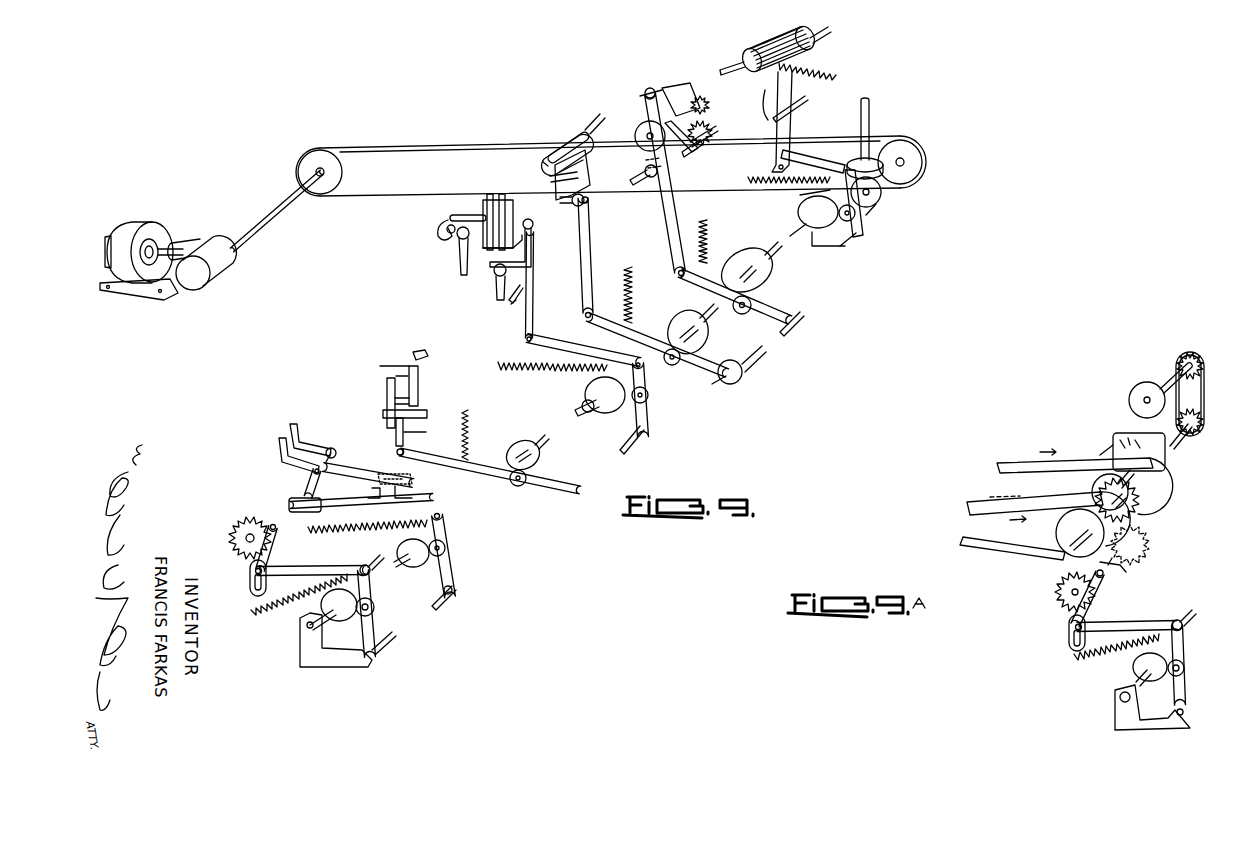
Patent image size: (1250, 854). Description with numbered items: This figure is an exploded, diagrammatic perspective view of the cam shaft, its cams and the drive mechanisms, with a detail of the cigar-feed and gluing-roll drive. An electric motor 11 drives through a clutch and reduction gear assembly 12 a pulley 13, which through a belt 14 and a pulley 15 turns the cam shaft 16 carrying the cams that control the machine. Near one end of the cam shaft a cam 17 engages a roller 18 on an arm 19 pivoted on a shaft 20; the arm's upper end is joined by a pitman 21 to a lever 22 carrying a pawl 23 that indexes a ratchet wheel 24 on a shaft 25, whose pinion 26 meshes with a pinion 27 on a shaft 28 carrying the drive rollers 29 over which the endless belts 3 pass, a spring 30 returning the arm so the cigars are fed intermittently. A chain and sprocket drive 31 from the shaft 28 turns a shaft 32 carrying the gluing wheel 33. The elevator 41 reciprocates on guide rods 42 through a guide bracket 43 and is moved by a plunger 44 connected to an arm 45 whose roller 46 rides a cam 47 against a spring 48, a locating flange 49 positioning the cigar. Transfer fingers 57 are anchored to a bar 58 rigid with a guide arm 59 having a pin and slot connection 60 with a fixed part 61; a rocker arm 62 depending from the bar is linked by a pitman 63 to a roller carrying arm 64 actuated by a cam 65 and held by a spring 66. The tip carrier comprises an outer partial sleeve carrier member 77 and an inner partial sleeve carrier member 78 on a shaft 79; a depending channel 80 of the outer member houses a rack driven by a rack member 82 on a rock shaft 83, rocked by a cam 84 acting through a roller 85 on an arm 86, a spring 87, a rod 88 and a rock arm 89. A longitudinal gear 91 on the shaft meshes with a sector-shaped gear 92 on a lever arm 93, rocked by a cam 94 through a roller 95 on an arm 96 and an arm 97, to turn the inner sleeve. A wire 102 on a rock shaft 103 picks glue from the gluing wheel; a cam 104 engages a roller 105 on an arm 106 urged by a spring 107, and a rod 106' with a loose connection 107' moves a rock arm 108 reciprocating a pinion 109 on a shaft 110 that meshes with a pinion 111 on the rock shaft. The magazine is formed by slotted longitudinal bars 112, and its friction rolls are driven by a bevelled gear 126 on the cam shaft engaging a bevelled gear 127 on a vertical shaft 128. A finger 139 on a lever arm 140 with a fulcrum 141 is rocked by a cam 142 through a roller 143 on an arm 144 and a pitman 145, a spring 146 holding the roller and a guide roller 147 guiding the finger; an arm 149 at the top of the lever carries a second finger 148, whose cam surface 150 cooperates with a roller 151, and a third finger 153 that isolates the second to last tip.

In FIG. 9A, the endless belts 3 is at (1040, 458).
In FIG. 9, the electric motor 11 is at (150, 226).
In FIG. 9, the clutch and reduction gear assembly 12 is at (230, 257).
In FIG. 9, the pulley 13 is at (333, 166).
In FIG. 9, the belt 14 is at (407, 148).
In FIG. 9, the pulley 15 is at (911, 155).
In FIG. 9, the cam shaft 16 is at (374, 580).
In FIG. 9A, the cam shaft 16 is at (1190, 624).
In FIG. 9, the cam 17 is at (344, 612).
In FIG. 9A, the cam 17 is at (1133, 670).
In FIG. 9, the roller 18 is at (363, 617).
In FIG. 9A, the roller 18 is at (1185, 665).
In FIG. 9, the arm 19 is at (386, 642).
In FIG. 9A, the arm 19 is at (1186, 691).
In FIG. 9, the shaft 20 is at (437, 610).
In FIG. 9, the rod or pitman 21 is at (306, 570).
In FIG. 9A, the rod or pitman 21 is at (1135, 625).
In FIG. 9, the lever 22 is at (250, 570).
In FIG. 9A, the lever 22 is at (1068, 620).
In FIG. 9, the pawl 23 is at (270, 524).
In FIG. 9A, the pawl 23 is at (1104, 580).
In FIG. 9, the ratchet wheel 24 is at (240, 530).
In FIG. 9A, the ratchet wheel 24 is at (1058, 590).
In FIG. 9A, the shaft 25 is at (1130, 566).
In FIG. 9A, the pinion 26 is at (1154, 542).
In FIG. 9A, the pinion 27 is at (1142, 500).
In FIG. 9, the shaft 28 is at (640, 180).
In FIG. 9A, the shaft 28 is at (1167, 463).
In FIG. 9A, the drive rollers 29 is at (1095, 488).
In FIG. 9, the spring 30 is at (274, 616).
In FIG. 9A, the spring 30 is at (1078, 657).
In FIG. 9, the chain and sprocket drive 31 is at (645, 162).
In FIG. 9A, the chain and sprocket drive 31 is at (1207, 388).
In FIG. 9A, the shaft 32 is at (1175, 376).
In FIG. 9, the gluing wheel 33 is at (640, 133).
In FIG. 9A, the gluing wheel 33 is at (1142, 395).
In FIG. 9, the elevator 41 is at (422, 384).
In FIG. 9, the guide rods 42 is at (424, 398).
In FIG. 9, the guide bracket 43 is at (428, 414).
In FIG. 9, the plunger 44 is at (428, 432).
In FIG. 9, the arm 45 is at (488, 462).
In FIG. 9, the roller 46 is at (518, 487).
In FIG. 9, the cam 47 is at (542, 452).
In FIG. 9, the spring 48 is at (471, 420).
In FIG. 9, the locating flange 49 is at (418, 355).
In FIG. 9, the fingers 57 is at (310, 440).
In FIG. 9, the bar 58 is at (333, 446).
In FIG. 9, the guide arm 59 is at (372, 470).
In FIG. 9, the pin and slot connection 60 is at (398, 478).
In FIG. 9, the fixed part 61 is at (404, 496).
In FIG. 9, the rocker arm 62 is at (316, 484).
In FIG. 9, the rod or pitman 63 is at (346, 504).
In FIG. 9, the roller carrying arm 64 is at (452, 562).
In FIG. 9, the cam 65 is at (415, 565).
In FIG. 9, the spring 66 is at (366, 530).
In FIG. 9, the outer partial sleeve carrier member 77 is at (578, 130).
In FIG. 9, the inner partial sleeve carrier member 78 is at (544, 162).
In FIG. 9, the shaft 79 is at (832, 40).
In FIG. 9, the depending channel 80 is at (583, 173).
In FIG. 9, the rack member 82 is at (552, 185).
In FIG. 9, the rock shaft 83 is at (575, 207).
In FIG. 9, the cam 84 is at (672, 328).
In FIG. 9, the roller 85 is at (672, 366).
In FIG. 9, the arm 86 is at (727, 360).
In FIG. 9, the spring 87 is at (633, 265).
In FIG. 9, the rod 88 is at (594, 246).
In FIG. 9, the rock arm 89 is at (583, 226).
In FIG. 9, the longitudinal gear 91 is at (775, 50).
In FIG. 9, the sector-shaped gear 92 is at (818, 76).
In FIG. 9, the lever arm 93 is at (800, 150).
In FIG. 9, the cam 94 is at (805, 210).
In FIG. 9, the roller 95 is at (856, 213).
In FIG. 9, the arm 96 is at (862, 222).
In FIG. 9, the arm 97 is at (822, 160).
In FIG. 9, the wire 102 is at (686, 154).
In FIG. 9, the rock shaft 103 is at (697, 150).
In FIG. 9, the cam 104 is at (746, 258).
In FIG. 9, the roller 105 is at (744, 314).
In FIG. 9, the arm 106 is at (741, 302).
In FIG. 9, the pitman or rod 106' is at (678, 183).
In FIG. 9, the spring 107 is at (721, 237).
In FIG. 9, the loose connection 107' is at (674, 71).
In FIG. 9, the rock arm 108 is at (690, 90).
In FIG. 9, the pinion 109 is at (708, 104).
In FIG. 9, the shaft 110 is at (712, 127).
In FIG. 9, the pinion 111 is at (718, 130).
In FIG. 9, the slotted longitudinal bars 112 is at (502, 195).
In FIG. 9, the bevelled gear 126 is at (882, 192).
In FIG. 9, the bevelled gear 127 is at (875, 160).
In FIG. 9, the vertical shaft 128 is at (866, 104).
In FIG. 9, the finger 139 is at (496, 275).
In FIG. 9, the lever arm 140 is at (533, 312).
In FIG. 9, the fulcrum 141 is at (515, 303).
In FIG. 9, the cam 142 is at (609, 410).
In FIG. 9, the roller 143 is at (648, 398).
In FIG. 9, the arm 144 is at (648, 425).
In FIG. 9, the rod or pitman 145 is at (565, 345).
In FIG. 9, the spring 146 is at (546, 370).
In FIG. 9, the guide roller 147 is at (509, 301).
In FIG. 9, the second finger 148 is at (445, 222).
In FIG. 9, the arm 149 is at (530, 220).
In FIG. 9, the cam surface 150 is at (451, 250).
In FIG. 9, the roller 151 is at (461, 250).
In FIG. 9, the third finger 153 is at (470, 212).